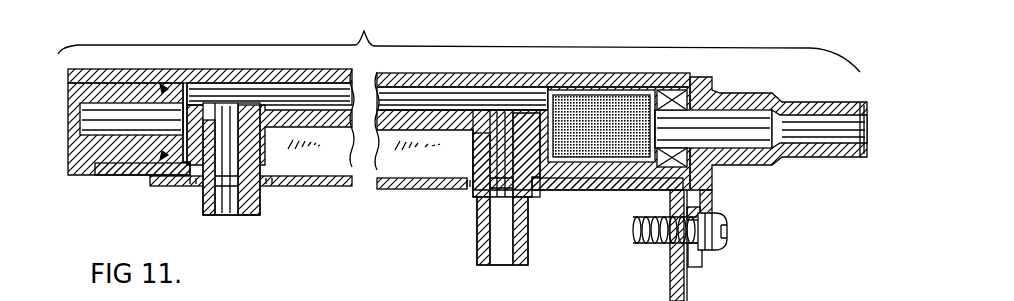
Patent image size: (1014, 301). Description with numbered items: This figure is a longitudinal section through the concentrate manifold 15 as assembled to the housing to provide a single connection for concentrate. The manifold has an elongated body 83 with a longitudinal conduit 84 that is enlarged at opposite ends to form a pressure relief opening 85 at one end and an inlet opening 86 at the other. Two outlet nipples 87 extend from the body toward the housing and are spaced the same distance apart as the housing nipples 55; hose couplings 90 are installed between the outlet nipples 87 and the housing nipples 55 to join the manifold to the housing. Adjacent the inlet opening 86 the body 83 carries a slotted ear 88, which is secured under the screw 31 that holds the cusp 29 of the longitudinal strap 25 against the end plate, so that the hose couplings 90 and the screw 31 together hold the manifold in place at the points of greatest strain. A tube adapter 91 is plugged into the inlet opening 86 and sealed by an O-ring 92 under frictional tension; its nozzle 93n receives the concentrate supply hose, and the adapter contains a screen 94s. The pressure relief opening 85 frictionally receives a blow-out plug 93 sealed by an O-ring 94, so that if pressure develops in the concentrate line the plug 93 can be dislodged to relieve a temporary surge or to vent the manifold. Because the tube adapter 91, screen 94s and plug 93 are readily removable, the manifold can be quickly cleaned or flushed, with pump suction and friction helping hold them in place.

The concentrate manifold 15 is at (252, 69).
The longitudinal strap 25 is at (416, 195).
The strap cusp 29 is at (672, 260).
The screw 31 is at (728, 232).
The housing nipple 55 is at (478, 240).
The elongated body 83 is at (320, 178).
The longitudinal conduit 84 is at (463, 98).
The pressure relief opening 85 is at (140, 82).
The inlet opening 86 is at (675, 98).
The outlet nipple 87 is at (262, 154).
The slotted ear 88 is at (712, 215).
The hose coupling 90 is at (205, 198).
The tube adapter 91 is at (745, 95).
The O-ring 92 is at (660, 187).
The blow-out plug 93 is at (97, 173).
The nozzle 93n is at (816, 165).
The O-ring 94 is at (163, 166).
The screen 94s is at (598, 115).